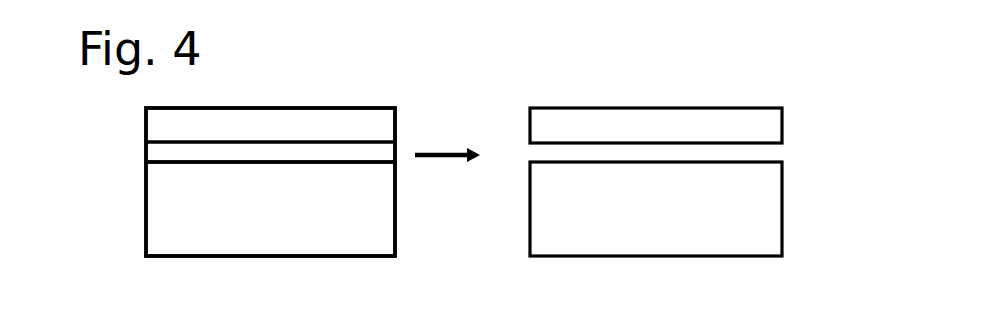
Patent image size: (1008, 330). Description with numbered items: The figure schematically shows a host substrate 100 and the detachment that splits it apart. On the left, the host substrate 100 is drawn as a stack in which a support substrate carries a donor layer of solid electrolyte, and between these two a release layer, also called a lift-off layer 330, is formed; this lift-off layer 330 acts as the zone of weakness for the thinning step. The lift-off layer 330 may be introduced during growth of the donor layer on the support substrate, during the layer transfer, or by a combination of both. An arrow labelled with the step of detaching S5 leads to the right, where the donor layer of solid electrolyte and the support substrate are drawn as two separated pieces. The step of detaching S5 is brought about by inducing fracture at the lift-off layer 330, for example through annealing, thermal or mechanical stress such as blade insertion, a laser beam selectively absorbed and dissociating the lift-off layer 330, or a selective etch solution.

The host substrate 100 is at (172, 262).
The release layer (lift-off layer) 330 is at (180, 153).
The step of detaching S5 is at (447, 143).